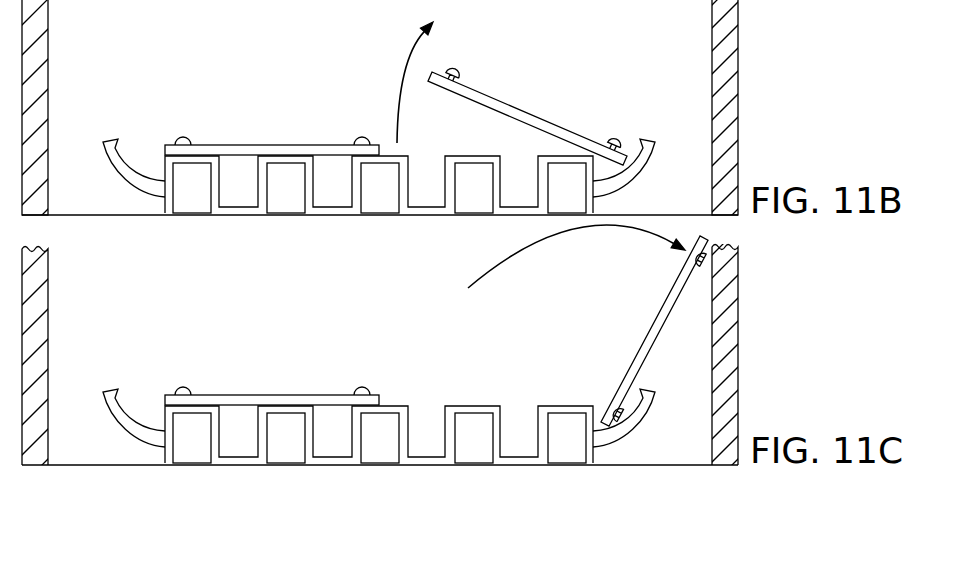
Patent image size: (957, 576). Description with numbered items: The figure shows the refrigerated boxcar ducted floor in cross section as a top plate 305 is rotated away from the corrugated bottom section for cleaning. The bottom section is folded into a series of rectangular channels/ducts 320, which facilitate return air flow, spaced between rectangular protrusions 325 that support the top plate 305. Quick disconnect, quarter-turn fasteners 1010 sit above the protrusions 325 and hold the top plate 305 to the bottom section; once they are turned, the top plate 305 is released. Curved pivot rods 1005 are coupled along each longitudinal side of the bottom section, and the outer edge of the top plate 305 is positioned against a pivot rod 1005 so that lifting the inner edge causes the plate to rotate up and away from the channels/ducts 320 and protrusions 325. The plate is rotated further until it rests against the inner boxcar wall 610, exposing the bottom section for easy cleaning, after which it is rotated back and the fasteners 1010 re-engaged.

In FIG. 11B, the top plate 305 is at (271, 145).
In FIG. 11C, the top plate 305 is at (271, 395).
In FIG. 11B, the channels/ducts 320 is at (335, 192).
In FIG. 11C, the channels/ducts 320 is at (335, 442).
In FIG. 11B, the protrusions 325 is at (378, 192).
In FIG. 11C, the protrusions 325 is at (378, 442).
In FIG. 11B, the inner boxcar wall 610 is at (736, 60).
In FIG. 11C, the inner boxcar wall 610 is at (737, 309).
In FIG. 11B, the pivot rods 1005 is at (109, 143).
In FIG. 11C, the pivot rods 1005 is at (109, 393).
In FIG. 11B, the quick disconnect, quarter-turn fasteners 1010 is at (183, 137).
In FIG. 11C, the quick disconnect, quarter-turn fasteners 1010 is at (183, 387).